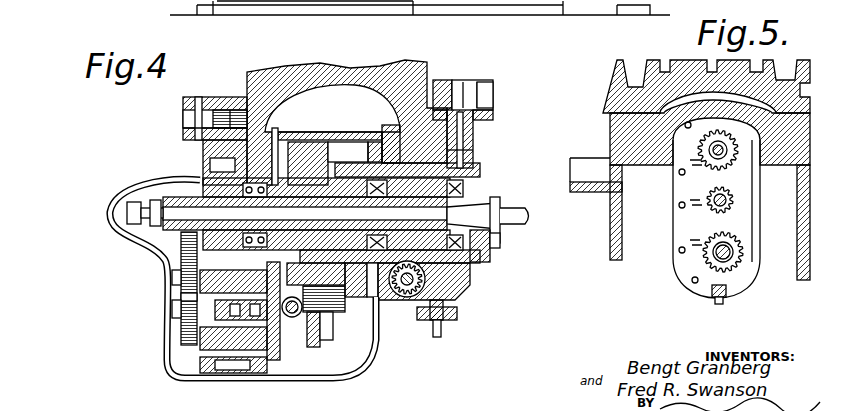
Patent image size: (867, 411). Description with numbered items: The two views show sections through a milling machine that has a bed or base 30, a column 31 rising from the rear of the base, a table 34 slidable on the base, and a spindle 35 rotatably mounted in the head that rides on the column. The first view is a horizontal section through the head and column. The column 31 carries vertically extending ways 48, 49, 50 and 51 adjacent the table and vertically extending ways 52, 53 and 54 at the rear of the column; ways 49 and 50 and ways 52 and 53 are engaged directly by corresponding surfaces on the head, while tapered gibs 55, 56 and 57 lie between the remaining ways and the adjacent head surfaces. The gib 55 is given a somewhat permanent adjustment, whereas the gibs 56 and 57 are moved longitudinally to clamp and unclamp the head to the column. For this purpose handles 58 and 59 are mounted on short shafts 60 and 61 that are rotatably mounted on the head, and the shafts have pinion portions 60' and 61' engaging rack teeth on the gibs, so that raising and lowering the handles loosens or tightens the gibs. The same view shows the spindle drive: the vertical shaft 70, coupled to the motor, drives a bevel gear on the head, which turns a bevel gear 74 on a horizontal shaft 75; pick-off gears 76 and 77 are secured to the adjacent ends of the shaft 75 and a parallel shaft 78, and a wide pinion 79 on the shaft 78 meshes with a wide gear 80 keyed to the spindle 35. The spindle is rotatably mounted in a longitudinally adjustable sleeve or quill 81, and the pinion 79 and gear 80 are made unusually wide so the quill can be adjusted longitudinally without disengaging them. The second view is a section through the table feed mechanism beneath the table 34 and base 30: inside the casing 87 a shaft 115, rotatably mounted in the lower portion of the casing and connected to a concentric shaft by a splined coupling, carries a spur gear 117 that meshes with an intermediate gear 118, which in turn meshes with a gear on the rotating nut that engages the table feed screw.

In FIG. 4, the column 31 is at (386, 78).
In FIG. 4, the short shaft 61 is at (190, 118).
In FIG. 4, the pinion portion 61' is at (238, 88).
In FIG. 4, the tapered gib 57 is at (230, 125).
In FIG. 4, the handle 59 is at (185, 133).
In FIG. 4, the vertically extending way 53 is at (205, 150).
In FIG. 4, the vertically extending way 52 is at (205, 167).
In FIG. 4, the wide gear 80 is at (310, 160).
In FIG. 4, the vertically extending way 54 is at (276, 138).
In FIG. 4, the tapered gib 55 is at (372, 160).
In FIG. 4, the vertically extending way 48 is at (393, 130).
In FIG. 4, the sleeve or quill 81 is at (480, 170).
In FIG. 4, the vertically extending way 51 is at (473, 125).
In FIG. 4, the vertically extending way 50 is at (473, 137).
In FIG. 4, the vertically extending way 49 is at (473, 152).
In FIG. 4, the pinion portion 60' is at (440, 76).
In FIG. 4, the tapered gib 56 is at (448, 108).
In FIG. 4, the short shaft 60 is at (479, 76).
In FIG. 4, the handle 58 is at (493, 85).
In FIG. 4, the spindle 35 is at (490, 260).
In FIG. 4, the parallel shaft 78 is at (273, 262).
In FIG. 4, the bevel gear 74 is at (283, 350).
In FIG. 4, the horizontal shaft 75 is at (212, 324).
In FIG. 4, the pick-off gear 76 is at (190, 314).
In FIG. 4, the pick-off gear 77 is at (180, 258).
In FIG. 4, the wide pinion 79 is at (337, 300).
In FIG. 4, the shaft 70 is at (292, 316).
In FIG. 5, the table 34 is at (810, 75).
In FIG. 5, the bed or base 30 is at (810, 150).
In FIG. 5, the casing 87 is at (760, 205).
In FIG. 5, the intermediate gear 118 is at (735, 208).
In FIG. 5, the spur gear 117 is at (742, 258).
In FIG. 5, the shaft 115 is at (742, 278).